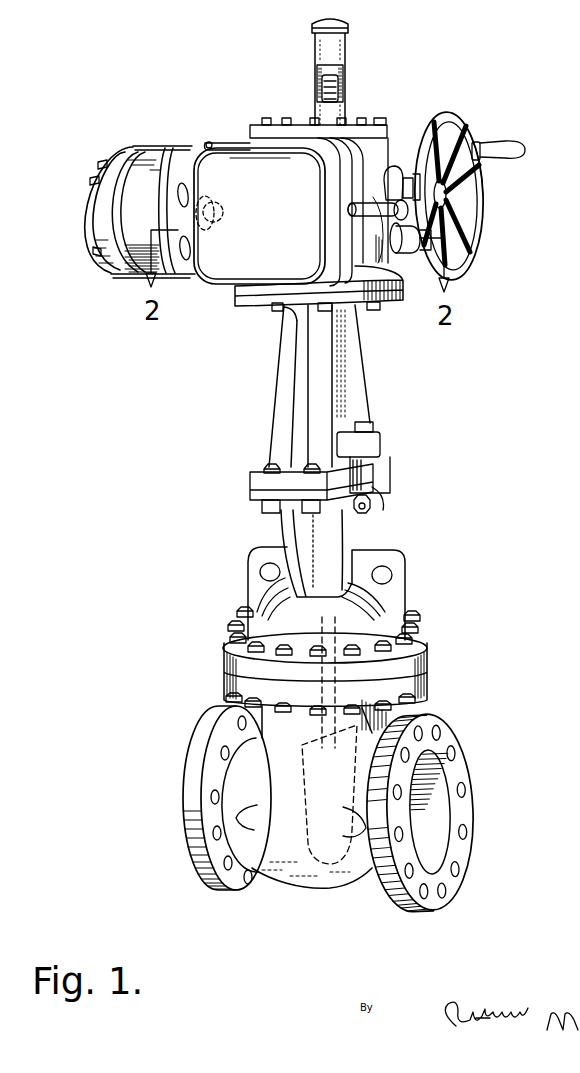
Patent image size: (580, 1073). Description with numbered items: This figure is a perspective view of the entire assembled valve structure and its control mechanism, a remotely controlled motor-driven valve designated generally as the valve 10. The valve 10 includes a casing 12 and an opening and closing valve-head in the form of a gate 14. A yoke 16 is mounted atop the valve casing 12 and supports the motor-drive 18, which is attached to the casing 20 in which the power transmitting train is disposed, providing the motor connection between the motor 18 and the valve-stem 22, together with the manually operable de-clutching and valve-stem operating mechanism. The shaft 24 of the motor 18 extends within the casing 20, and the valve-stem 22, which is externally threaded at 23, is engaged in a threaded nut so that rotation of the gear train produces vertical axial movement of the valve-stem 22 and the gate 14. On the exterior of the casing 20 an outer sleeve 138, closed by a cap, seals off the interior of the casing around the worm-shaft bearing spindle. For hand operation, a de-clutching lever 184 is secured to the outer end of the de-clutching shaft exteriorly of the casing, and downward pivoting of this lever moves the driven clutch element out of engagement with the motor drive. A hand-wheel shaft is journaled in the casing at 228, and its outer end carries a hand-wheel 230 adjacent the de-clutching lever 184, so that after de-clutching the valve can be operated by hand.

The valve 10 is at (488, 613).
The casing 12 is at (397, 715).
The gate 14 is at (300, 877).
The yoke 16 is at (358, 387).
The motor-drive 18 is at (168, 148).
The casing 20 is at (374, 156).
The valve-stem 22 is at (343, 90).
The external threads 23 is at (317, 82).
The shaft 24 is at (223, 203).
The outer sleeve 138 is at (411, 263).
The de-clutching lever 184 is at (353, 222).
The bearing 228 is at (405, 167).
The hand-wheel 230 is at (485, 209).